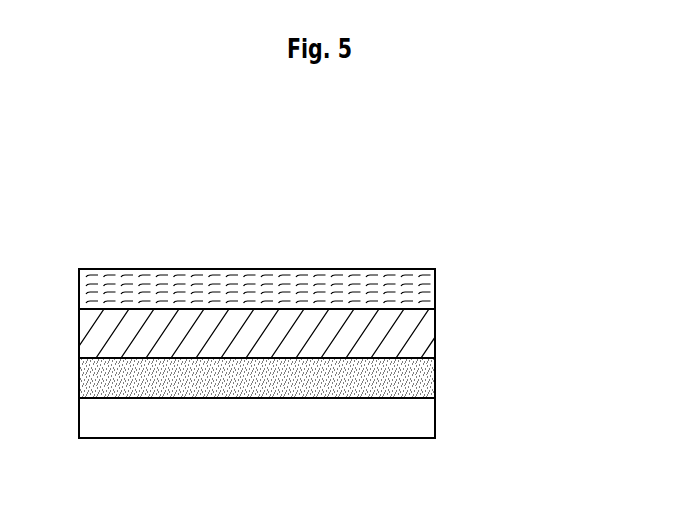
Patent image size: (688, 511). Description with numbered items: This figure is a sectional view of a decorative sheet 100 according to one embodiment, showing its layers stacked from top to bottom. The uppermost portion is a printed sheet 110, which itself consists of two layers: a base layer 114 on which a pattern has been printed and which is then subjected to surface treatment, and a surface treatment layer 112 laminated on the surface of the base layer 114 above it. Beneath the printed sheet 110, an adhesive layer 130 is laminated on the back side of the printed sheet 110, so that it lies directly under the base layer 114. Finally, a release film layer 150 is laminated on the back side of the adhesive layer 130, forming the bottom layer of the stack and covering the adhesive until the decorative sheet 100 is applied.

The decorative sheet 100 is at (383, 223).
The printed sheet 110 is at (515, 287).
The surface treatment layer 112 is at (435, 291).
The base layer 114 is at (435, 333).
The adhesive layer 130 is at (435, 379).
The release film layer 150 is at (435, 417).